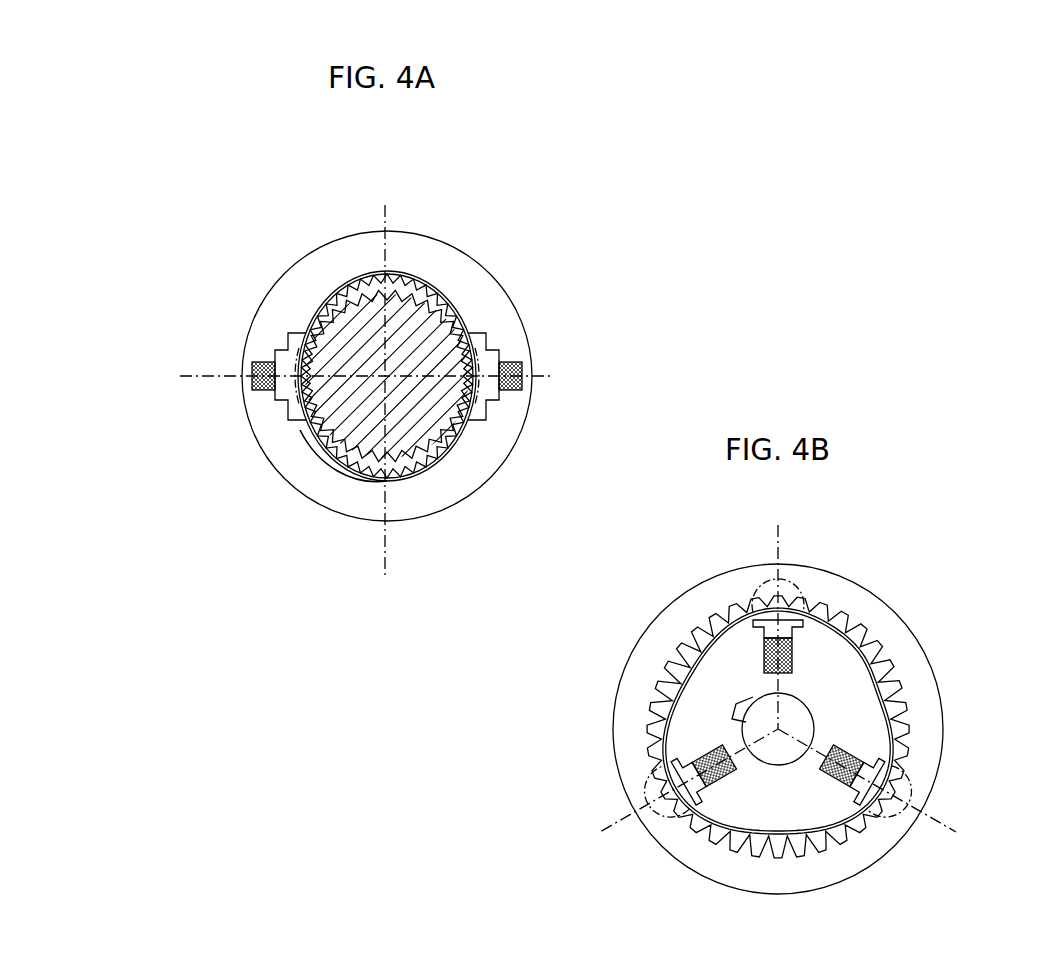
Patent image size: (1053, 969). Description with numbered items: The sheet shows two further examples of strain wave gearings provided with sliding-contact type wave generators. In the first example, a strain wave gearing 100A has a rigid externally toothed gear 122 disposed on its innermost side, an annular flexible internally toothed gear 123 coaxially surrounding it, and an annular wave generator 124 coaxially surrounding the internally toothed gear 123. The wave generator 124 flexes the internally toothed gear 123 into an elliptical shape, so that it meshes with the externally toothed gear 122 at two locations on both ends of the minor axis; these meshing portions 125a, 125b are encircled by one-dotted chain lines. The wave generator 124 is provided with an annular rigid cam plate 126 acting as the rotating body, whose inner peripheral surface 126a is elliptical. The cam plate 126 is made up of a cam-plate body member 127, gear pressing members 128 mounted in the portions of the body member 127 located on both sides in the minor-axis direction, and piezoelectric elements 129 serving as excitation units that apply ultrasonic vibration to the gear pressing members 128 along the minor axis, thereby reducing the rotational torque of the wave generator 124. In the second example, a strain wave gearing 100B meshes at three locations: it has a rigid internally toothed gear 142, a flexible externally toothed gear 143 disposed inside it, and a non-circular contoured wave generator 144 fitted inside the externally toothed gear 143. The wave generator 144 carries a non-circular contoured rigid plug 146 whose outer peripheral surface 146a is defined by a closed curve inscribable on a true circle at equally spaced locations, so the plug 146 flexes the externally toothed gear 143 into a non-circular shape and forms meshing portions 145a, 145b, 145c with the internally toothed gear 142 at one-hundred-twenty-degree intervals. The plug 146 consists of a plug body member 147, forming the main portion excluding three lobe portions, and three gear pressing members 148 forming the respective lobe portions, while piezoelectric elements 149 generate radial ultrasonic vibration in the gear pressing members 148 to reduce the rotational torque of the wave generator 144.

In FIG. 4A, the strain wave gearing 100A is at (507, 232).
In FIG. 4A, the rigid externally toothed gear 122 is at (407, 354).
In FIG. 4A, the flexible internally toothed gear 123 is at (413, 271).
In FIG. 4A, the wave generator 124 is at (327, 257).
In FIG. 4A, the meshing portion 125a is at (490, 389).
In FIG. 4A, the meshing portion 125b is at (285, 362).
In FIG. 4A, the rigid cam plate 126 is at (178, 512).
In FIG. 4A, the inner peripheral surface 126a is at (318, 305).
In FIG. 4A, the cam-plate body member 127 is at (295, 437).
In FIG. 4A, the gear pressing member 128 is at (285, 396).
In FIG. 4A, the piezoelectric element 129 is at (252, 390).
In FIG. 4B, the strain wave gearing 100B is at (941, 527).
In FIG. 4B, the rigid internally toothed gear 142 is at (914, 664).
In FIG. 4B, the flexible externally toothed gear 143 is at (891, 690).
In FIG. 4B, the wave generator 144 is at (844, 731).
In FIG. 4B, the meshing portion 145a is at (795, 588).
In FIG. 4B, the meshing portion 145b is at (665, 814).
In FIG. 4B, the meshing portion 145c is at (907, 787).
In FIG. 4B, the rigid plug 146 is at (779, 794).
In FIG. 4B, the outer peripheral surface 146a is at (838, 786).
In FIG. 4B, the plug body member 147 is at (745, 808).
In FIG. 4B, the gear pressing member 148 is at (761, 618).
In FIG. 4B, the piezoelectric element 149 is at (758, 655).